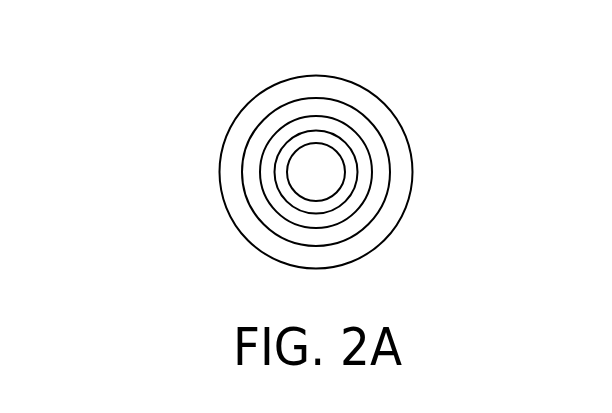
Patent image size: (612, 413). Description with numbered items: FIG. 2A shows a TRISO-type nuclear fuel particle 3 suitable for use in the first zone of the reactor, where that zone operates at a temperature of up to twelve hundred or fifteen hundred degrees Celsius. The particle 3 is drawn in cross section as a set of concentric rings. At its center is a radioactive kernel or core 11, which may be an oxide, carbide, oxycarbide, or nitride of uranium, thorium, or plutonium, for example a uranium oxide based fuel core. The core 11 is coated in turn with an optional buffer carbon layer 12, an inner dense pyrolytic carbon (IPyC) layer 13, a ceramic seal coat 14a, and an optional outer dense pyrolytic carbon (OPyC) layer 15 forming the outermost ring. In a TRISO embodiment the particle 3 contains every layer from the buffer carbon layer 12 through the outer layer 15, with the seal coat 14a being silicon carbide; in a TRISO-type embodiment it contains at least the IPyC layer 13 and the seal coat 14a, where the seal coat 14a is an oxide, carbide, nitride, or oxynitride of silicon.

The nuclear fuel particle 3 is at (190, 139).
The core 11 is at (342, 192).
The buffer carbon layer 12 is at (358, 173).
The inner dense pyrolytic carbon layer 13 is at (368, 148).
The ceramic seal coat 14a is at (360, 110).
The outer dense pyrolytic carbon layer 15 is at (247, 108).